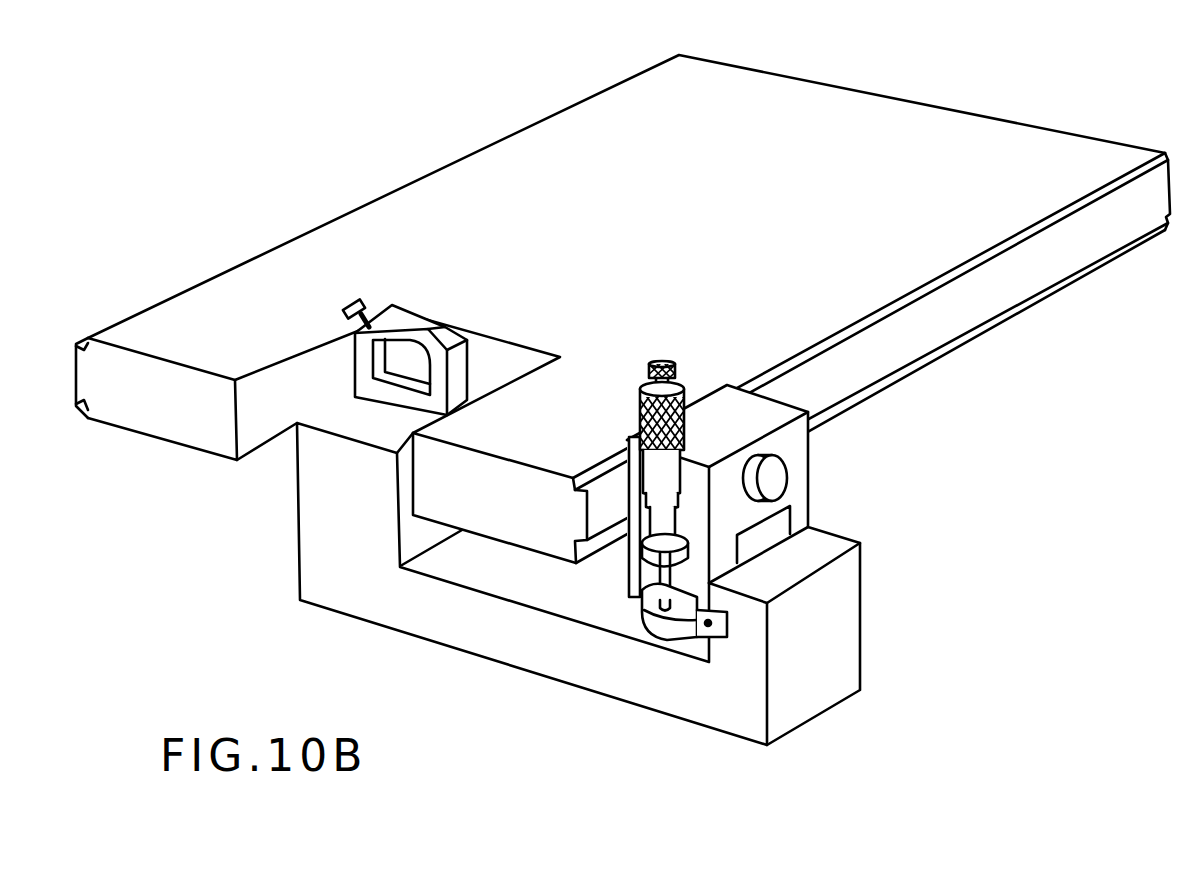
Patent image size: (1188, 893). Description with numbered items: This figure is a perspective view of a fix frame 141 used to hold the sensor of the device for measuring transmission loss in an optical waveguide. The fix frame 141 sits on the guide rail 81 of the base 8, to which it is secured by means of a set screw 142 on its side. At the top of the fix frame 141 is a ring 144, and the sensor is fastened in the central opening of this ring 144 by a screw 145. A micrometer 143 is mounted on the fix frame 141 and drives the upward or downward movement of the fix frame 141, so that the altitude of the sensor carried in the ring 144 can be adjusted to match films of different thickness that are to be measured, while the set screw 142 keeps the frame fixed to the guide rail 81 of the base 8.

The base 8 is at (557, 133).
The guide rail 81 is at (1070, 216).
The fix frame 141 is at (617, 700).
The set screw 142 is at (776, 477).
The micrometer 143 is at (661, 362).
The ring 144 is at (427, 322).
The screw 145 is at (360, 296).